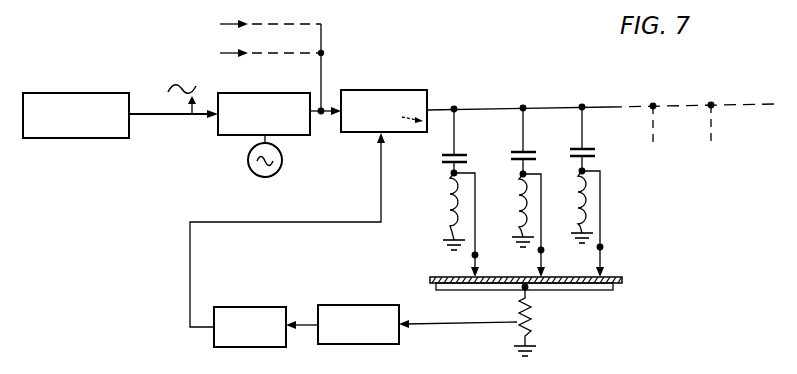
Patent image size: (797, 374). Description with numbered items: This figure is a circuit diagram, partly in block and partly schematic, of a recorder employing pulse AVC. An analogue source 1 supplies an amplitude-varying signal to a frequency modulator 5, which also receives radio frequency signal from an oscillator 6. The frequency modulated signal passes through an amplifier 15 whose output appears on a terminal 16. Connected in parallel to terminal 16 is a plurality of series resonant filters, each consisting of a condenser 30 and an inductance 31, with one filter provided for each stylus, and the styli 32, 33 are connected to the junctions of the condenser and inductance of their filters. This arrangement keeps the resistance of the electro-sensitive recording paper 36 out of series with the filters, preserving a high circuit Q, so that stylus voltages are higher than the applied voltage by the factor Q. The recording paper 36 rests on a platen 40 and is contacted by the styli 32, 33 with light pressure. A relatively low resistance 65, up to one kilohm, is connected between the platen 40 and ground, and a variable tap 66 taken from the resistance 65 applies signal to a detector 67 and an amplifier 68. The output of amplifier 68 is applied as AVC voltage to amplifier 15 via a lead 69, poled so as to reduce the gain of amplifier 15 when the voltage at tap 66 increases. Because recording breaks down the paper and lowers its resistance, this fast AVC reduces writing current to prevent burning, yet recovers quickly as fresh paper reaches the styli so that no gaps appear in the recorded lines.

The source 1 is at (62, 138).
The frequency modulator 5 is at (290, 95).
The oscillator 6 is at (249, 176).
The amplifier 15 is at (402, 95).
The terminal 16 is at (322, 115).
The condenser 30 is at (458, 153).
The inductance 31 is at (448, 219).
The stylus 32 is at (478, 262).
The stylus 33 is at (544, 260).
The recording paper 36 is at (617, 276).
The platen 40 is at (573, 288).
The resistance 65 is at (532, 326).
The variable tap 66 is at (511, 323).
The detector 67 is at (373, 310).
The amplifier 68 is at (268, 312).
The lead 69 is at (320, 223).